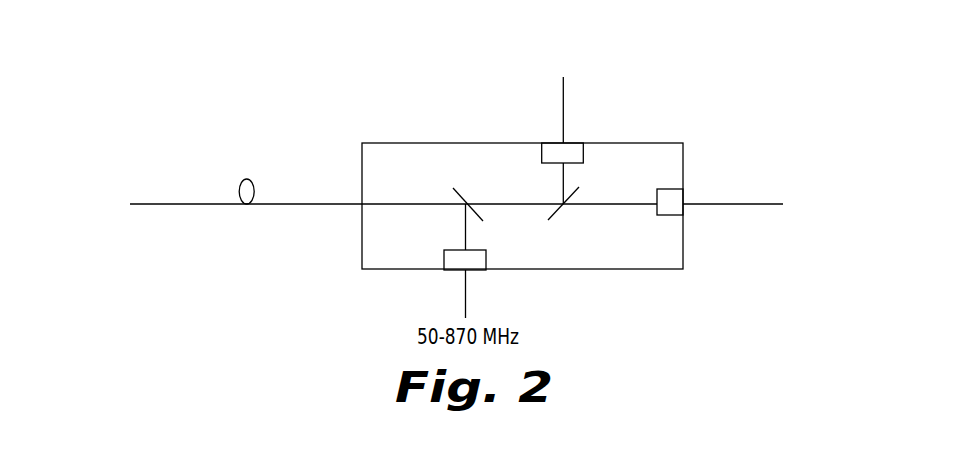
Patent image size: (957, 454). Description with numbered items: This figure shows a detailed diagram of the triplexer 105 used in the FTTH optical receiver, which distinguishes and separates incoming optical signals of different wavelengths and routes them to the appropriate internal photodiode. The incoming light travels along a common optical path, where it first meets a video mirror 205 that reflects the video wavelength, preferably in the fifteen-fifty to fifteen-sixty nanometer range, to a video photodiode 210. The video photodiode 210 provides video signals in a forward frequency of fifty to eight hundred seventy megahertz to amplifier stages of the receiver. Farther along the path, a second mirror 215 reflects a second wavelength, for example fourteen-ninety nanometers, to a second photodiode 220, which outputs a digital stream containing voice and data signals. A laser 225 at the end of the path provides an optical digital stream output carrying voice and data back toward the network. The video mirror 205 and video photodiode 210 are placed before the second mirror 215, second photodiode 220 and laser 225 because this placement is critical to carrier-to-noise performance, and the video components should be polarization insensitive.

The triplexer 105 is at (785, 38).
The video mirror 205 is at (471, 193).
The video photodiode 210 is at (447, 258).
The second mirror 215 is at (572, 212).
The second photodiode 220 is at (571, 155).
The laser 225 is at (675, 205).